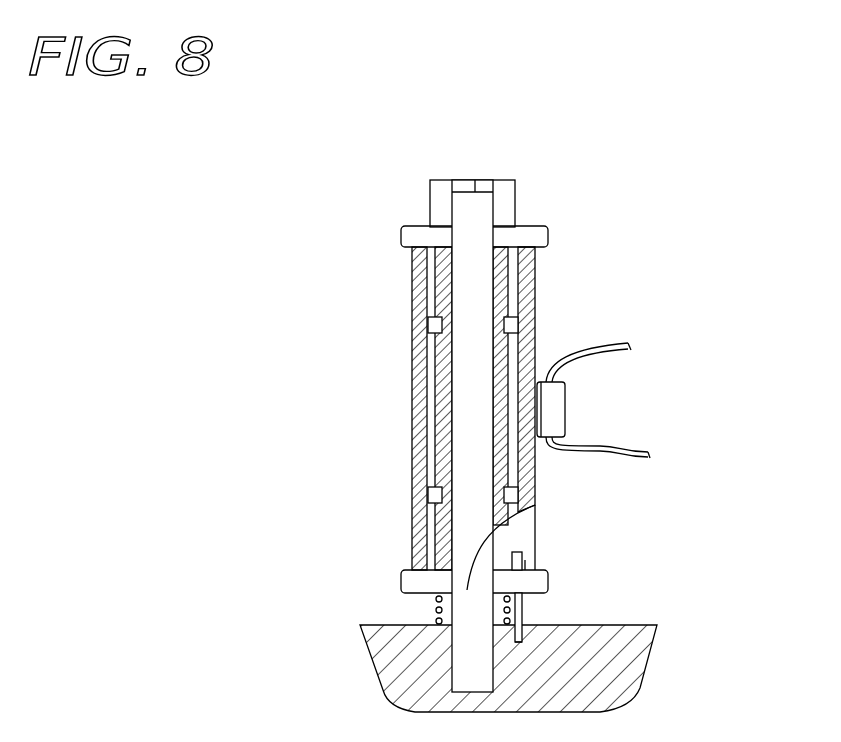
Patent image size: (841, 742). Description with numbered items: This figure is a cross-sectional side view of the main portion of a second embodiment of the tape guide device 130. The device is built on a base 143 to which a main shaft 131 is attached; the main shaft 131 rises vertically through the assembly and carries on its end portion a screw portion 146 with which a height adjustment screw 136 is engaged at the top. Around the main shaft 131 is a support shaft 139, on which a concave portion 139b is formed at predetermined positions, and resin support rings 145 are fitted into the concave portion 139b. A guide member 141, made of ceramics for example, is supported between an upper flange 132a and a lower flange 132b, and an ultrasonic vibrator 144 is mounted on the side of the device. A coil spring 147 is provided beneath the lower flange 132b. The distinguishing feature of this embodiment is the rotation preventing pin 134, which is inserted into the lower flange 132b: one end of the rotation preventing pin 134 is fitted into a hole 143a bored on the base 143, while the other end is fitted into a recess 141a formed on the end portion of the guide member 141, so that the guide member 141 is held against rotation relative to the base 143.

The tape guide device 130 is at (368, 204).
The main shaft 131 is at (457, 677).
The upper flange 132a is at (530, 226).
The lower flange 132b is at (402, 577).
The rotation preventing pin 134 is at (522, 604).
The height adjustment screw 136 is at (442, 180).
The support shaft 139 is at (436, 452).
The concave portion 139b is at (520, 332).
The guide member 141 is at (412, 397).
The recess 141a is at (522, 543).
The base 143 is at (617, 695).
The hole 143a is at (530, 634).
The ultrasonic vibrator 144 is at (566, 395).
The resin support rings 145 is at (428, 330).
The screw portion 146 is at (477, 186).
The coil spring 147 is at (435, 611).